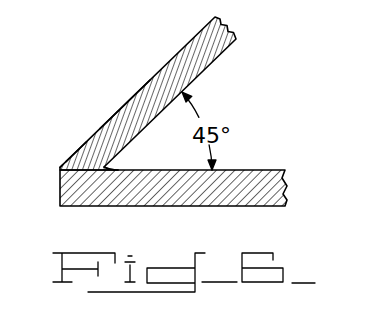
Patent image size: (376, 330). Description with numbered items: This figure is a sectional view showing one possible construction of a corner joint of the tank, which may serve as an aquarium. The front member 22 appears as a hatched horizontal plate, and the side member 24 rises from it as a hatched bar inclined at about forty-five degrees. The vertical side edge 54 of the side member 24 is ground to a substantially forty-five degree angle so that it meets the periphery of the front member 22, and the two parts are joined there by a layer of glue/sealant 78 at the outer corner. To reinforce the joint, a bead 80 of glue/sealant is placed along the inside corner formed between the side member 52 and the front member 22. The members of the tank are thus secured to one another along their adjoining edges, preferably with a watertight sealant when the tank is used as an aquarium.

The front member 22 is at (180, 206).
The side member 24 is at (203, 70).
The side member 52 is at (123, 106).
The vertical side edge 54 is at (88, 155).
The layer of glue/sealant 78 is at (66, 167).
The bead of glue/sealant 80 is at (118, 170).